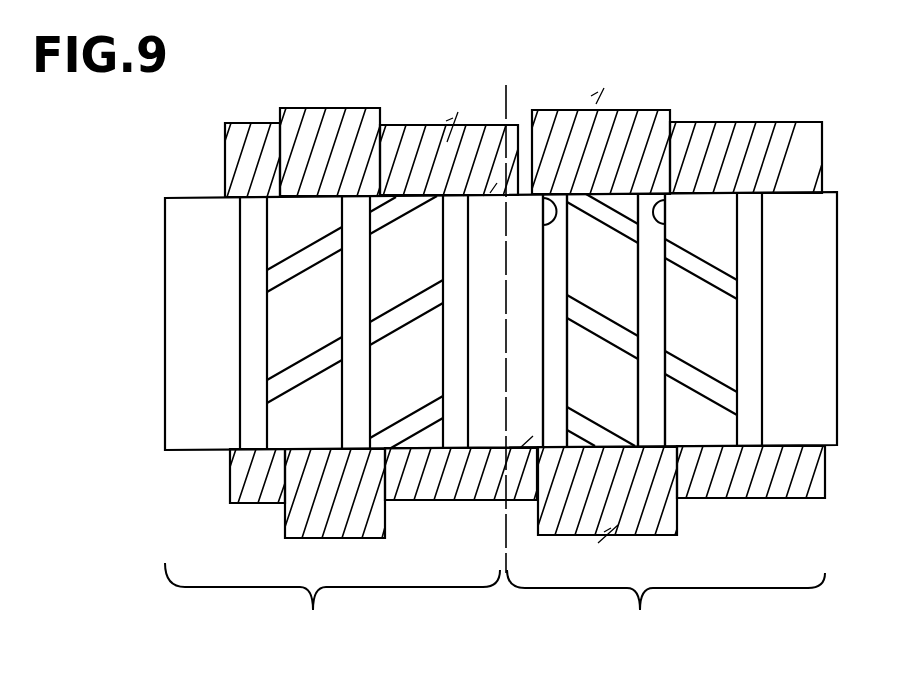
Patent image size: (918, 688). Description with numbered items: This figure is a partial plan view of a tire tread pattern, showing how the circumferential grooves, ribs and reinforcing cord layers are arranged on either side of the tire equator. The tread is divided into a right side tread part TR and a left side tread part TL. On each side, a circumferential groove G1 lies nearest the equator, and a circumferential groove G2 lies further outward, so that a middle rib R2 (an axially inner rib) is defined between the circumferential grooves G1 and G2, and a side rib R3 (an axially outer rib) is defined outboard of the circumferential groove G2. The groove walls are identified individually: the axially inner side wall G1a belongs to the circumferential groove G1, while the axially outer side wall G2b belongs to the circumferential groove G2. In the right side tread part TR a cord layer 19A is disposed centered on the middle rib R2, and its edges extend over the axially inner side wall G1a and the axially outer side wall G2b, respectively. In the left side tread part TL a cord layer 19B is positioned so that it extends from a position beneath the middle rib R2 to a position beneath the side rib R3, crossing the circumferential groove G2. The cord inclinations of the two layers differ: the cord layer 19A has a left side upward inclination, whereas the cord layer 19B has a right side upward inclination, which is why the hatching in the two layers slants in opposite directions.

The side rib R3 is at (305, 187).
The middle rib R2 is at (603, 193).
The circumferential groove G1 is at (556, 194).
The circumferential groove G2 is at (652, 181).
The axially inner side wall of circumferential groove G1 G1a is at (543, 198).
The axially outer side wall of circumferential groove G2 G2b is at (665, 206).
The cord layer 19A is at (663, 528).
The cord layer 19B is at (292, 525).
The left side tread part TL is at (332, 604).
The right side tread part TR is at (666, 609).